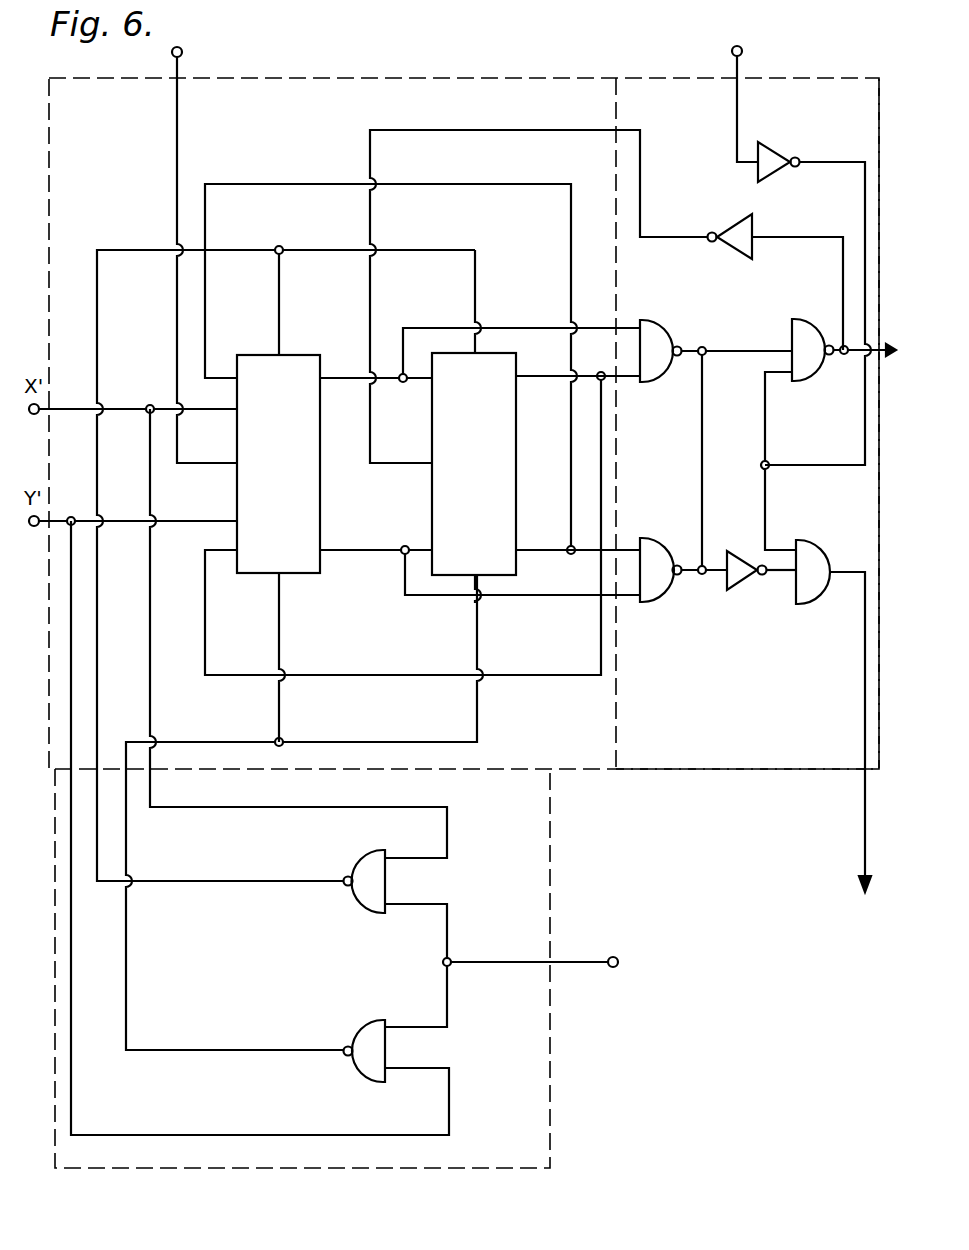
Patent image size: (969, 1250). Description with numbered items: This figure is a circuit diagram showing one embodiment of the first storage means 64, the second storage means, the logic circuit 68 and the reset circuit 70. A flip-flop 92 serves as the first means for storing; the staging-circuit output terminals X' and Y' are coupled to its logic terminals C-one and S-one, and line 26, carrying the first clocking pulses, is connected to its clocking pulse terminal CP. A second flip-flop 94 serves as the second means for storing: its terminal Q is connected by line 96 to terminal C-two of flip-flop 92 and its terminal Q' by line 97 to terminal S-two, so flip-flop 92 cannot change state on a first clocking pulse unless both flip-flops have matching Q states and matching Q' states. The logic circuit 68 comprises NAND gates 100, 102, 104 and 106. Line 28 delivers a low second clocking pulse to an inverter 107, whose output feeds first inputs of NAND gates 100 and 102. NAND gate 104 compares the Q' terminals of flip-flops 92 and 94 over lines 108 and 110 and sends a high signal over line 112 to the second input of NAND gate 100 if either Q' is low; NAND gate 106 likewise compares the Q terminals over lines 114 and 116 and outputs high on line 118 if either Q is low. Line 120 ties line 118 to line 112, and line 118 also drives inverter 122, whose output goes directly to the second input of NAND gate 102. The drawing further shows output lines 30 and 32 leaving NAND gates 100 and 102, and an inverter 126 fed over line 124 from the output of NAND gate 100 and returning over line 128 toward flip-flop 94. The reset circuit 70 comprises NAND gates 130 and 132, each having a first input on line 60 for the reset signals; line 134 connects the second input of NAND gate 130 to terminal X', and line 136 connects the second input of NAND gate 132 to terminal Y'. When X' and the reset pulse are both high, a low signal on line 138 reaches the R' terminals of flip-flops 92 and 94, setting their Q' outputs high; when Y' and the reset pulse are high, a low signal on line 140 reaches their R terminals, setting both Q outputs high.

The line 26 is at (177, 120).
The line 28 is at (737, 121).
The output line 30 is at (856, 354).
The output line 32 is at (865, 702).
The line 60 is at (592, 962).
The first storage means 64 is at (612, 757).
The logic circuit 68 is at (850, 762).
The reset circuit 70 is at (531, 1157).
The first flip-flop 92 is at (293, 553).
The second flip-flop 94 is at (489, 543).
The line 96 is at (535, 184).
The conductor 97 is at (580, 675).
The NAND gate 100 is at (814, 319).
The NAND gate 102 is at (814, 604).
The NAND gate 104 is at (666, 328).
The NAND gate 106 is at (662, 538).
The inverter 107 is at (776, 150).
The line 108 is at (598, 328).
The line 110 is at (630, 378).
The line 112 is at (736, 352).
The line 114 is at (580, 550).
The line 116 is at (620, 597).
The line 118 is at (714, 574).
The line 120 is at (702, 458).
The inverter 122 is at (737, 551).
The conductor 124 is at (777, 237).
The inverter 126 is at (732, 222).
The conductor 128 is at (480, 130).
The NAND gate 130 is at (345, 896).
The NAND gate 132 is at (352, 1036).
The line 134 is at (304, 807).
The line 136 is at (125, 1135).
The line 138 is at (150, 250).
The line 140 is at (420, 742).